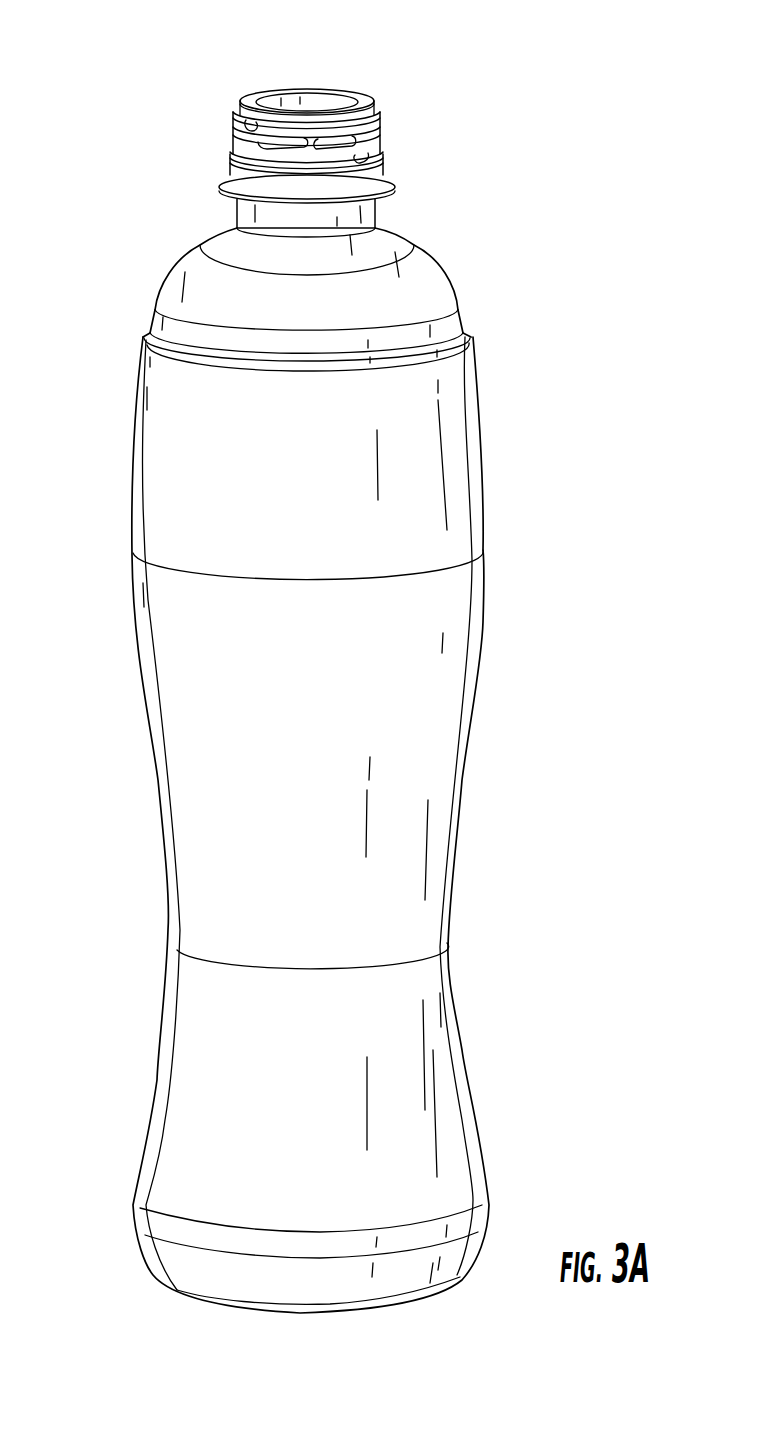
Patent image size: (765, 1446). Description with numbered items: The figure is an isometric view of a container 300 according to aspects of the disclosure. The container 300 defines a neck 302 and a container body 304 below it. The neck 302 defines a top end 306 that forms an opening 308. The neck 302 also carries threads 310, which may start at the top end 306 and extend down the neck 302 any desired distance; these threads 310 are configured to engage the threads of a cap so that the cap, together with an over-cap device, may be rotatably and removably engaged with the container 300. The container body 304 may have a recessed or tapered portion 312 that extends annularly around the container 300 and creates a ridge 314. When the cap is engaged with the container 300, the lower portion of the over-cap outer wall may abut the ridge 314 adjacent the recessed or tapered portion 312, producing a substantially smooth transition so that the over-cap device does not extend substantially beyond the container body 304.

The container 300 is at (312, 658).
The neck 302 is at (383, 208).
The container body 304 is at (483, 622).
The top end 306 is at (238, 105).
The opening 308 is at (278, 91).
The threads 310 is at (387, 122).
The recessed or tapered portion 312 is at (153, 308).
The ridge 314 is at (148, 325).